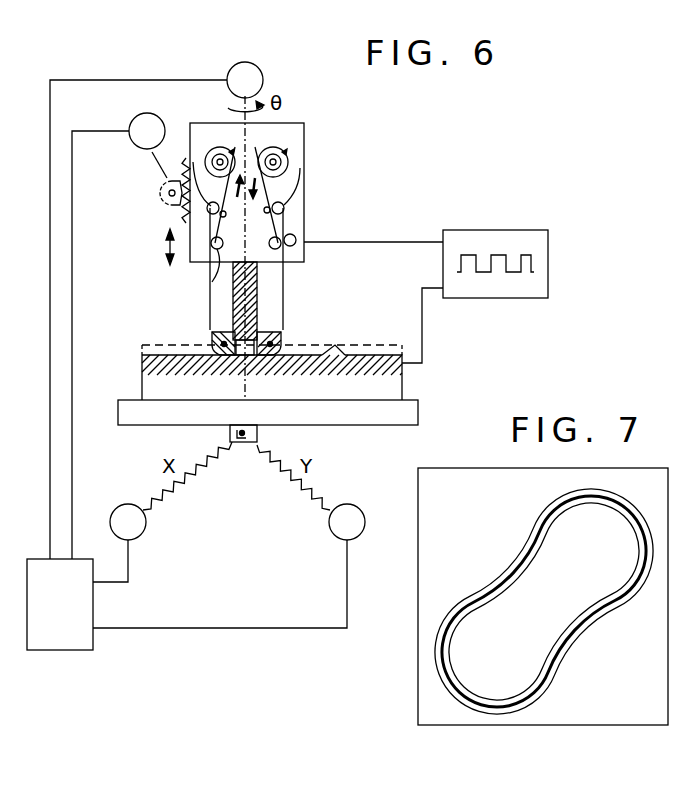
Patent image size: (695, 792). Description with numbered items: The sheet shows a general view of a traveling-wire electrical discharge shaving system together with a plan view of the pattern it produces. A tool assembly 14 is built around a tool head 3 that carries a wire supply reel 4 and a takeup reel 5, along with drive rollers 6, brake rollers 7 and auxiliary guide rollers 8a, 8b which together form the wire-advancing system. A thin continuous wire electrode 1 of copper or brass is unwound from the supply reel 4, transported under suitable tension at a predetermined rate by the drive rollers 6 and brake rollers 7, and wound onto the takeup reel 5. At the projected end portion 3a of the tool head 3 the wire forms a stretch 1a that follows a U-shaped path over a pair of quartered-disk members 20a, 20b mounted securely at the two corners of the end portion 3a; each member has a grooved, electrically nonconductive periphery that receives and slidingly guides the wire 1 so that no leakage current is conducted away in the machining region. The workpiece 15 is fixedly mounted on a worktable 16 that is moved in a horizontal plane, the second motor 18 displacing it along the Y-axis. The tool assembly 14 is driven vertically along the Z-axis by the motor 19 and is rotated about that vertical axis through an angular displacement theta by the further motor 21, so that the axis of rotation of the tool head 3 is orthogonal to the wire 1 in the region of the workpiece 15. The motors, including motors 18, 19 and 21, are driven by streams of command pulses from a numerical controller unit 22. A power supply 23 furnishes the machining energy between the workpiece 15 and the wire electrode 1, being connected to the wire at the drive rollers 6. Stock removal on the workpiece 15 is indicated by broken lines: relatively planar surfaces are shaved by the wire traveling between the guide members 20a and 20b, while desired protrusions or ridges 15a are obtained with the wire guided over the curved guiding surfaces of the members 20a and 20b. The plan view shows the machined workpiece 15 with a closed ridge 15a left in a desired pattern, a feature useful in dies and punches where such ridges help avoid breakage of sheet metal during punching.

In FIG. 6, the wire electrode 1 is at (210, 302).
In FIG. 6, the stretch 1a is at (250, 352).
In FIG. 6, the tool head 3 is at (304, 206).
In FIG. 6, the projected end portion 3a is at (258, 278).
In FIG. 6, the wire supply reel 4 is at (217, 147).
In FIG. 6, the takeup reel 5 is at (288, 152).
In FIG. 6, the drive rollers 6 is at (294, 204).
In FIG. 6, the brake rollers 7 is at (171, 185).
In FIG. 6, the auxiliary guide roller 8a is at (210, 282).
In FIG. 6, the auxiliary guide roller 8b is at (299, 241).
In FIG. 6, the tool assembly 14 is at (147, 226).
In FIG. 6, the workpiece 15 is at (403, 383).
In FIG. 7, the workpiece 15 is at (485, 720).
In FIG. 6, the ridge 15a is at (340, 342).
In FIG. 7, the ridge 15a is at (562, 697).
In FIG. 6, the worktable 16 is at (418, 412).
In FIG. 6, the second motor 18 is at (330, 519).
In FIG. 6, the motor 19 is at (134, 144).
In FIG. 6, the quartered-disk member 20a is at (211, 340).
In FIG. 6, the quartered-disk member 20b is at (286, 336).
In FIG. 6, the further motor 21 is at (253, 62).
In FIG. 6, the numerical controller unit 22 is at (60, 650).
In FIG. 6, the power supply 23 is at (493, 230).